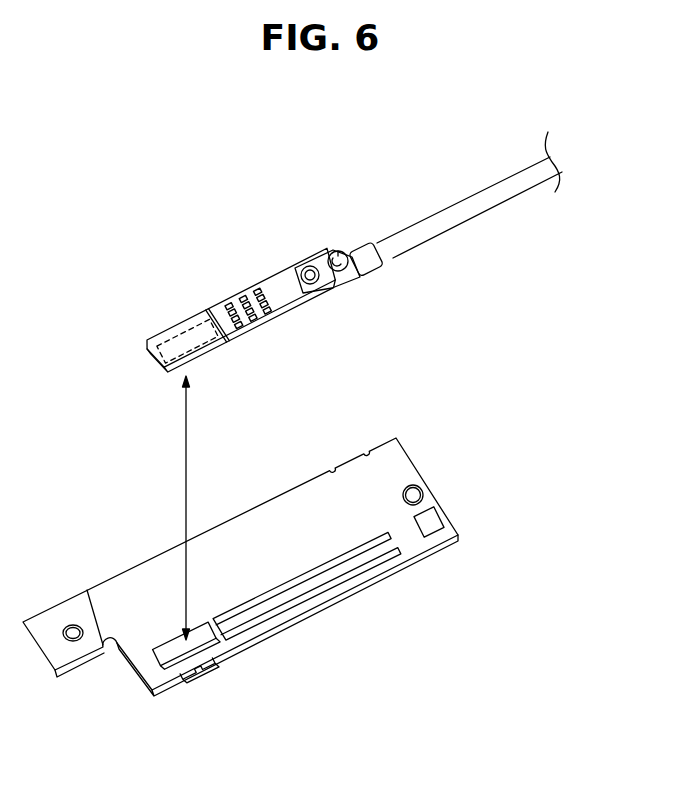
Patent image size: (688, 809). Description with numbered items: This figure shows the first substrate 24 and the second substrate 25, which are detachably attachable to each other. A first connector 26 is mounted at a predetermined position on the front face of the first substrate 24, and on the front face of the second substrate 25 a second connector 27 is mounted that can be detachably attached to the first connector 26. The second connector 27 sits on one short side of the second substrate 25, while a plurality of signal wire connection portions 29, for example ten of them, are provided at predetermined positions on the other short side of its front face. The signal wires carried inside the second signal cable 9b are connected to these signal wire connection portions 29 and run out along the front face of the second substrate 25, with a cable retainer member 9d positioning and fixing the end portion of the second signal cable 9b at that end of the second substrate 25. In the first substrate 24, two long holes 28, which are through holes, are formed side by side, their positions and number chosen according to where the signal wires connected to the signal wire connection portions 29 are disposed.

The second signal cable 9b is at (453, 214).
The cable retainer member 9d is at (324, 254).
The first substrate 24 is at (135, 583).
The second substrate 25 is at (207, 303).
The first connector 26 is at (165, 650).
The second connector 27 is at (173, 378).
The long holes 28 is at (333, 583).
The signal wire connection portions 29 is at (279, 318).